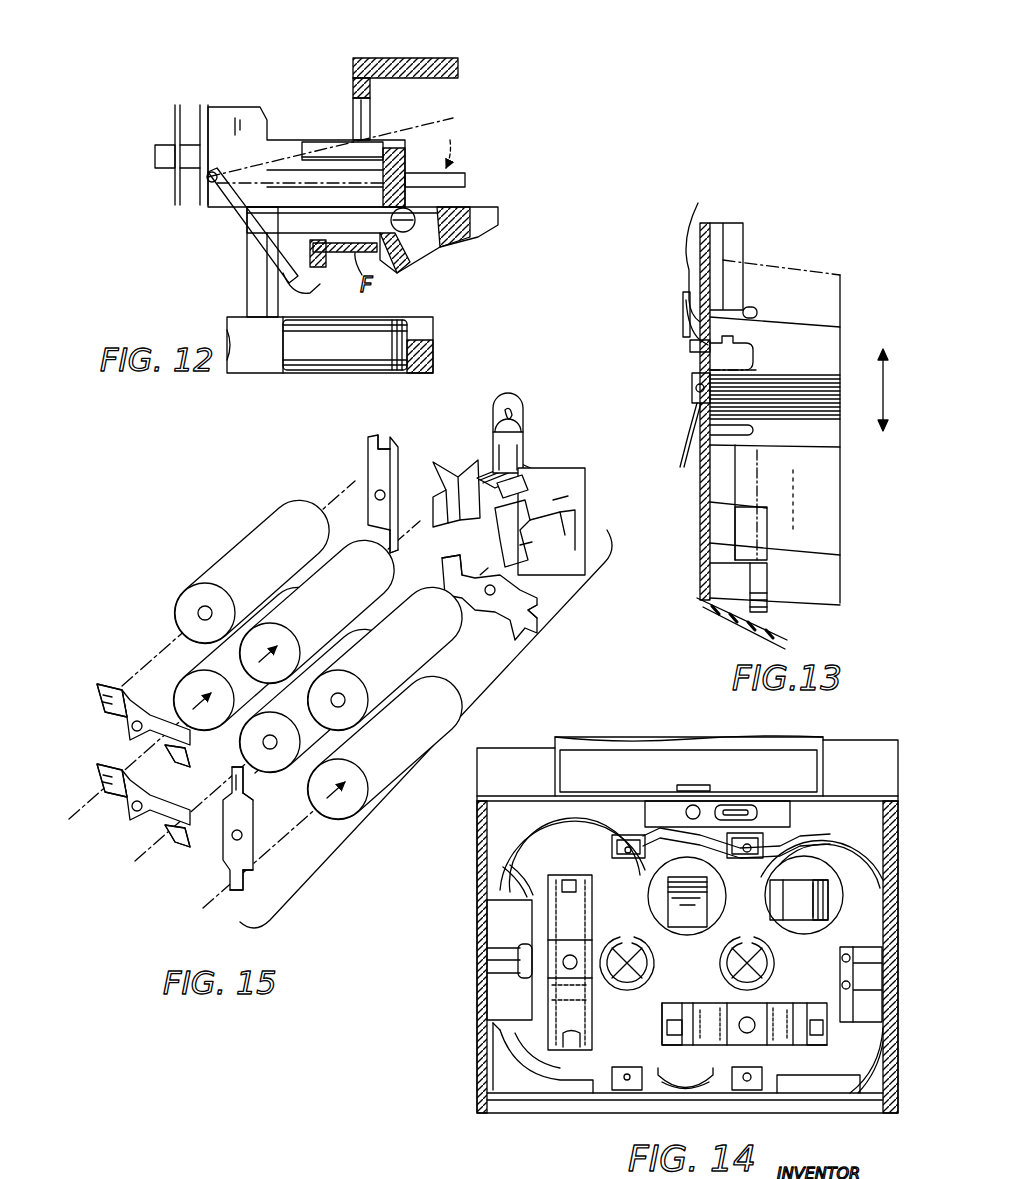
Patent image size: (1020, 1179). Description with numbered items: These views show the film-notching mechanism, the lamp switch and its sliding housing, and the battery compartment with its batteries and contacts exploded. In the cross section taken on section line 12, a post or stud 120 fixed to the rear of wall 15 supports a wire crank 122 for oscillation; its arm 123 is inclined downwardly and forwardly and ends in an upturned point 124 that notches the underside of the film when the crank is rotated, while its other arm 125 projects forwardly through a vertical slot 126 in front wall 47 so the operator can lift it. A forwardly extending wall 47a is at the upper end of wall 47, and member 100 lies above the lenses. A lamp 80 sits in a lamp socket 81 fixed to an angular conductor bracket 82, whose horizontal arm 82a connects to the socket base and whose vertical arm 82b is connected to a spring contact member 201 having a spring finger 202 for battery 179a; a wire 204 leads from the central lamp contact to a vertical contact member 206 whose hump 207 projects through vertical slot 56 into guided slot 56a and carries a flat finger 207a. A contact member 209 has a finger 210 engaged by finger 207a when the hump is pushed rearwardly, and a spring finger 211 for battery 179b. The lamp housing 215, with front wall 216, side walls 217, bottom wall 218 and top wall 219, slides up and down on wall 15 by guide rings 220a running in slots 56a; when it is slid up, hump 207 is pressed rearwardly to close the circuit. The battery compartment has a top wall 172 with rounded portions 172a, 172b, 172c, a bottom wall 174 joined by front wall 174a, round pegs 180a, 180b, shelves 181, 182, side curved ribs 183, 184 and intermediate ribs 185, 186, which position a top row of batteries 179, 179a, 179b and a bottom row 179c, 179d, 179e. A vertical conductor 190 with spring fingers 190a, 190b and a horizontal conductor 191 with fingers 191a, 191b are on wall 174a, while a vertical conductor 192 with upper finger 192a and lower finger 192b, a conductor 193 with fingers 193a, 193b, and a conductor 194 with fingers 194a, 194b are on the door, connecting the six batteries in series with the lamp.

In FIG. 13, the section line 12 is at (760, 631).
In FIG. 13, the wall 15 is at (712, 239).
In FIG. 12, the front wall 47 is at (353, 88).
In FIG. 12, the forwardly extending wall 47a is at (400, 52).
In FIG. 13, the vertical slot 56 is at (705, 382).
In FIG. 13, the guided slot 56a is at (723, 445).
In FIG. 15, the lamp 80 is at (522, 405).
In FIG. 15, the lamp socket 81 is at (495, 470).
In FIG. 15, the angular conductor bracket 82 is at (565, 446).
In FIG. 15, the horizontal arm 82a is at (500, 408).
In FIG. 15, the vertical arm 82b is at (492, 455).
In FIG. 12, the member 100 is at (444, 254).
In FIG. 12, the post or stud 120 is at (225, 145).
In FIG. 12, the crank 122 is at (222, 219).
In FIG. 12, the arm 123 is at (247, 238).
In FIG. 12, the upturned point 124 is at (305, 262).
In FIG. 12, the arm 125 is at (467, 181).
In FIG. 12, the vertical slot 126 is at (366, 122).
In FIG. 14, the top wall 172 is at (616, 816).
In FIG. 14, the rounded top portion 172a is at (570, 847).
In FIG. 14, the rounded top portion 172b is at (667, 830).
In FIG. 14, the rounded top portion 172c is at (802, 830).
In FIG. 14, the bottom wall 174 is at (647, 1053).
In FIG. 14, the front wall 174a is at (753, 895).
In FIG. 15, the battery 179 is at (234, 548).
In FIG. 15, the battery 179a is at (380, 578).
In FIG. 15, the battery 179b is at (447, 626).
In FIG. 15, the battery 179c is at (452, 716).
In FIG. 15, the battery 179d is at (287, 768).
In FIG. 15, the battery 179e is at (187, 703).
In FIG. 14, the round peg 180a is at (722, 960).
In FIG. 14, the round peg 180b is at (648, 942).
In FIG. 14, the shelf or ledge 181 is at (487, 947).
In FIG. 14, the shelf or ledge 182 is at (843, 945).
In FIG. 14, the side curved rib 183 is at (546, 1075).
In FIG. 14, the side curved rib 184 is at (840, 1078).
In FIG. 14, the intermediate rib 185 is at (625, 1091).
In FIG. 14, the intermediate rib 186 is at (750, 1092).
In FIG. 15, the vertical conductor 190 is at (356, 468).
In FIG. 14, the vertical conductor 190 is at (545, 987).
In FIG. 15, the upper spring finger 190a is at (390, 445).
In FIG. 14, the upper spring finger 190a is at (560, 1023).
In FIG. 15, the lower spring finger 190b is at (400, 502).
In FIG. 14, the lower spring finger 190b is at (567, 898).
In FIG. 15, the horizontal conductor 191 is at (551, 614).
In FIG. 14, the horizontal conductor 191 is at (805, 983).
In FIG. 15, the inner spring finger 191a is at (447, 578).
In FIG. 14, the inner spring finger 191a is at (696, 988).
In FIG. 15, the outer spring finger 191b is at (527, 636).
In FIG. 14, the outer spring finger 191b is at (822, 1047).
In FIG. 15, the vertical conductor 192 is at (223, 878).
In FIG. 15, the upper spring finger 192a is at (230, 870).
In FIG. 15, the clip tab 192b is at (253, 880).
In FIG. 15, the conductor 193 is at (112, 666).
In FIG. 15, the spring finger 193a is at (96, 690).
In FIG. 15, the spring finger 193b is at (178, 765).
In FIG. 15, the horizontal conductor 194 is at (130, 837).
In FIG. 15, the spring finger 194a is at (103, 795).
In FIG. 15, the spring finger 194b is at (177, 835).
In FIG. 15, the spring contact member 201 is at (449, 491).
In FIG. 15, the spring finger 202 is at (445, 460).
In FIG. 14, the spring finger 202 is at (673, 884).
In FIG. 13, the wire 204 is at (684, 447).
In FIG. 15, the wire 204 is at (570, 470).
In FIG. 13, the vertical contact member 206 is at (683, 368).
In FIG. 15, the vertical contact member 206 is at (530, 491).
In FIG. 13, the hump portion 207 is at (705, 352).
In FIG. 15, the hump portion 207 is at (520, 540).
In FIG. 13, the flat finger 207a is at (698, 208).
In FIG. 15, the flat finger 207a is at (562, 503).
In FIG. 15, the horizontal conductor or contact member 209 is at (540, 521).
In FIG. 13, the finger 210 is at (686, 292).
In FIG. 15, the finger 210 is at (566, 521).
In FIG. 15, the spring finger 211 is at (535, 547).
In FIG. 14, the spring finger 211 is at (823, 887).
In FIG. 13, the lamp housing 215 is at (824, 272).
In FIG. 13, the front wall 216 is at (843, 466).
In FIG. 13, the side walls 217 is at (823, 518).
In FIG. 13, the bottom wall 218 is at (813, 612).
In FIG. 13, the top wall 219 is at (808, 318).
In FIG. 13, the guide rings 220a is at (722, 386).